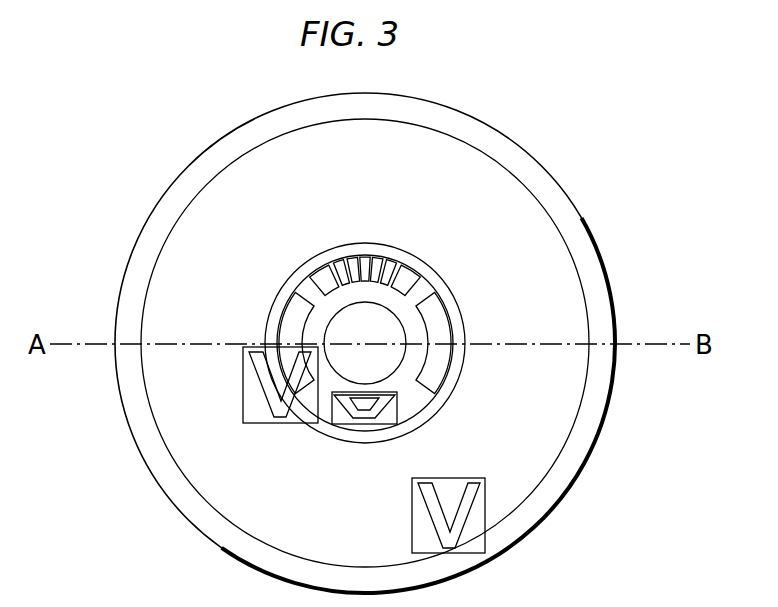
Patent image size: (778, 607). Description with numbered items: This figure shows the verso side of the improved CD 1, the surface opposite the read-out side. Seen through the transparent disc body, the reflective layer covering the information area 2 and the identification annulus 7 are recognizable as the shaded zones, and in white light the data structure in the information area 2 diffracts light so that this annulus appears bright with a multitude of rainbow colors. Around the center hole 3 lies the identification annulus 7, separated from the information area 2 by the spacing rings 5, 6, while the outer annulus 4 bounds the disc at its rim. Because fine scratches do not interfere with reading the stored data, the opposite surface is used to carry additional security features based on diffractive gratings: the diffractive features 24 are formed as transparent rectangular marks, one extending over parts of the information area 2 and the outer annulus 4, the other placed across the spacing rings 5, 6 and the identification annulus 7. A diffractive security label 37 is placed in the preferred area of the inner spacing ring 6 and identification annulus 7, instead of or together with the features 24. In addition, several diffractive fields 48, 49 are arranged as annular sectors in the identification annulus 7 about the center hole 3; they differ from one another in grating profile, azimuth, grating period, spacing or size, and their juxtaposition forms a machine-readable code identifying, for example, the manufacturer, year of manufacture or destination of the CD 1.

The improved CD 1 is at (129, 261).
The information area 2 is at (224, 238).
The center hole 3 is at (372, 335).
The outer annulus 4 is at (189, 190).
The spacing ring 5 is at (296, 298).
The inner spacing ring 6 is at (408, 360).
The identification annulus 7 is at (292, 333).
The diffractive features 24 is at (284, 427).
The diffractive security label 37 is at (352, 427).
The diffractive field 48 is at (357, 259).
The diffractive field 49 is at (412, 271).